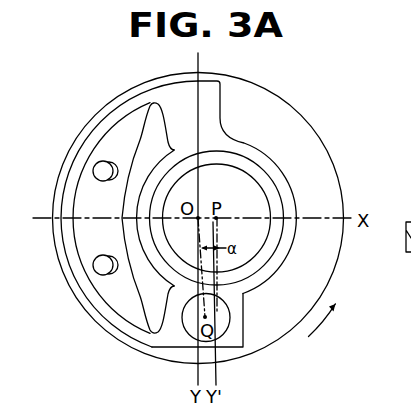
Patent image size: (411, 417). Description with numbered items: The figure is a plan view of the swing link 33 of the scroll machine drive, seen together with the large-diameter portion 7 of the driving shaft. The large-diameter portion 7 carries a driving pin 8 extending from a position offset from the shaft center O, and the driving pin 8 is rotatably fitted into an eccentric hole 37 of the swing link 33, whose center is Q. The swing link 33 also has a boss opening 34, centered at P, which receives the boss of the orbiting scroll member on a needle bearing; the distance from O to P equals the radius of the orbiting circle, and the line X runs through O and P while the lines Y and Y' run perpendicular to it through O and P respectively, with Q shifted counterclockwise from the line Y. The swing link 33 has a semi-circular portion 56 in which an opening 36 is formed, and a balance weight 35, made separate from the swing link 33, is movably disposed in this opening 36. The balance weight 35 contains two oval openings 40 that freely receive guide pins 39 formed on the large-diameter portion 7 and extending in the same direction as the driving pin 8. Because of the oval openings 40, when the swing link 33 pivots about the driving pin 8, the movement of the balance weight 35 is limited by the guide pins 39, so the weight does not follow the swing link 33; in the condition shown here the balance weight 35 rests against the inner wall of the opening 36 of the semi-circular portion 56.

The large-diameter portion 7 is at (320, 268).
The driving pin 8 is at (223, 319).
The swing link 33 is at (205, 108).
The boss opening 34 is at (254, 183).
The balance weight 35 is at (85, 195).
The opening 36 is at (150, 311).
The eccentric hole 37 is at (186, 323).
The guide pins 39 is at (95, 168).
The oval openings 40 is at (111, 162).
The semi-circular portion 56 is at (170, 94).